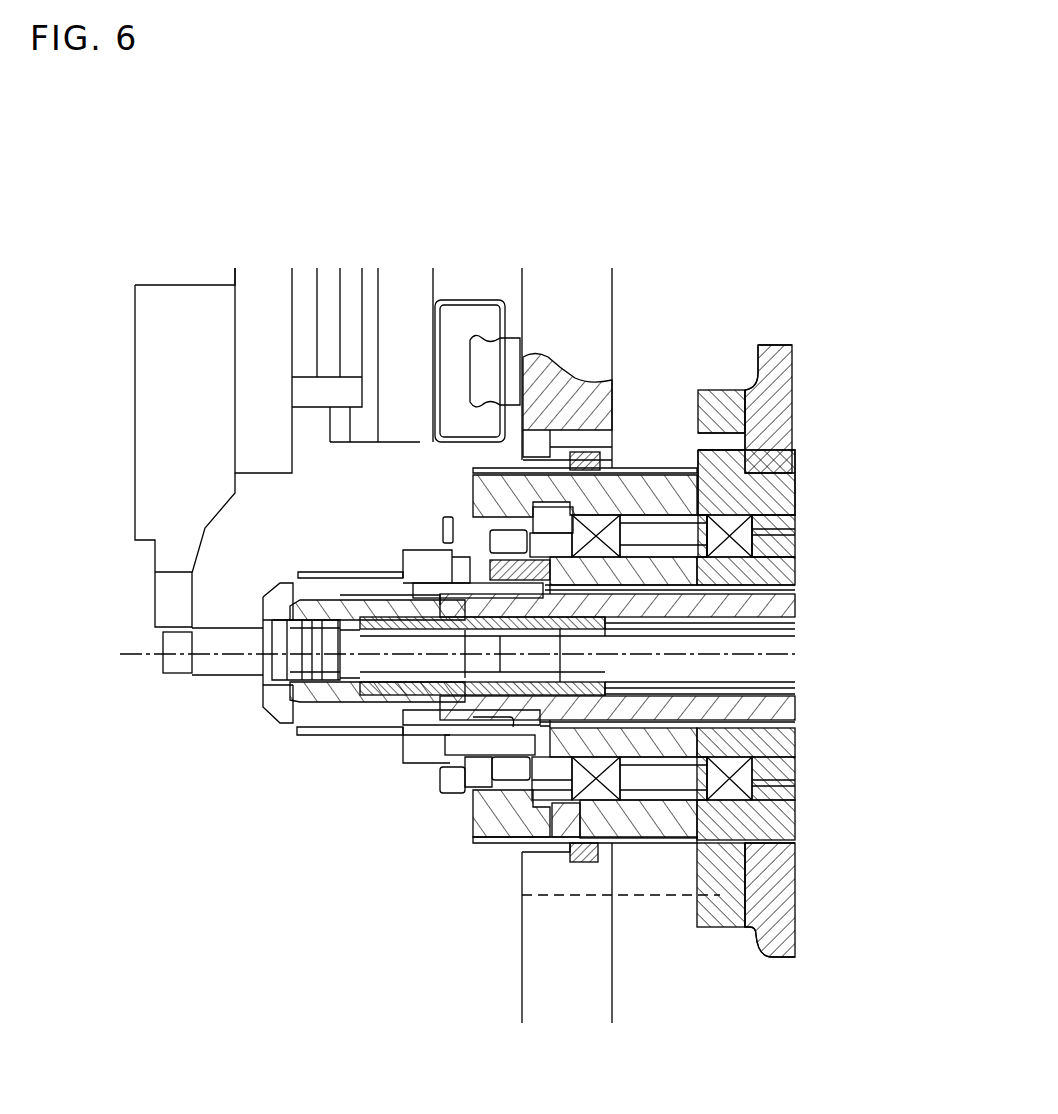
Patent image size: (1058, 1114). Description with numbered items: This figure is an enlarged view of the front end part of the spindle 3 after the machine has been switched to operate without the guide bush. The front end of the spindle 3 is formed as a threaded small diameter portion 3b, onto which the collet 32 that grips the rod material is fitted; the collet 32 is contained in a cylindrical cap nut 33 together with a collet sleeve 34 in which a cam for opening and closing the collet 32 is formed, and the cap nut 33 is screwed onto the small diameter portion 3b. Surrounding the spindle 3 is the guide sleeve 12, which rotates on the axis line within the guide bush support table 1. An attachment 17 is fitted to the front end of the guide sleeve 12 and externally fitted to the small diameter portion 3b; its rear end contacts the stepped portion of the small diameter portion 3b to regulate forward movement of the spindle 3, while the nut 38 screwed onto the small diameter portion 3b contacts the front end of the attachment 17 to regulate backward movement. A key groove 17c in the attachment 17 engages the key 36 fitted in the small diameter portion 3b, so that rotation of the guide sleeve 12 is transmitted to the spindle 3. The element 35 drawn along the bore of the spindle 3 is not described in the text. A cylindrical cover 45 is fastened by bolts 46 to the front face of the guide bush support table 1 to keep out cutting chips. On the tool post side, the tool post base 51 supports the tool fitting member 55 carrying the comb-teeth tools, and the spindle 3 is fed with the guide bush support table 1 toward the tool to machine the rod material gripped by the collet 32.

The guide bush support table 1 is at (795, 346).
The spindle 3 is at (795, 592).
The small diameter portion 3b is at (360, 597).
The guide sleeve 12 is at (792, 755).
The attachment 17 is at (463, 755).
The key groove 17c is at (513, 727).
The collet 32 is at (282, 722).
The cap nut 33 is at (285, 600).
The collet sleeve 34 is at (330, 702).
The draw tube 35 is at (795, 690).
The key 36 is at (420, 725).
The nut 38 is at (400, 742).
The cylindrical cover 45 is at (400, 550).
The bolts 46 is at (446, 530).
The tool post base 51 is at (607, 294).
The tool fitting member 55 is at (268, 460).